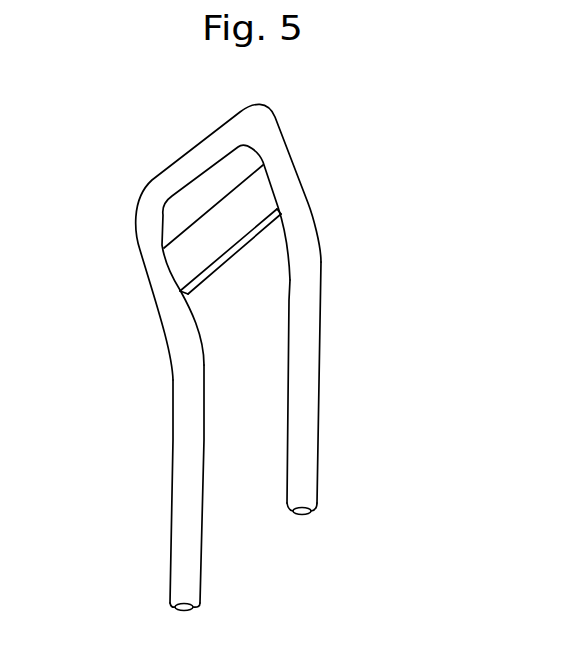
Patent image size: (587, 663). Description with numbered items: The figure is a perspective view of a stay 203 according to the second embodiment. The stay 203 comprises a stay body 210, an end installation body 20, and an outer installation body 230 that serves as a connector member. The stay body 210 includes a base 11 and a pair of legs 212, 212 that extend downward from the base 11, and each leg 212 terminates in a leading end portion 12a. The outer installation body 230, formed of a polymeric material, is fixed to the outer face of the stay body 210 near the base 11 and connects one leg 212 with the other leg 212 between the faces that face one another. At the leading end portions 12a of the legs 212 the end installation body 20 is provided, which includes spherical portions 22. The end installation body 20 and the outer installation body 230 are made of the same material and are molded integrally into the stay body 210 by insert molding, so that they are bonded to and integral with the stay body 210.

The stay 203 is at (371, 151).
The stay body 210 is at (322, 328).
The leg 212 is at (172, 418).
The outer installation body 230 is at (198, 235).
The base 11 is at (192, 152).
The leading end portion 12a is at (165, 609).
The end installation body 20 is at (238, 571).
The spherical portion 22 is at (184, 608).